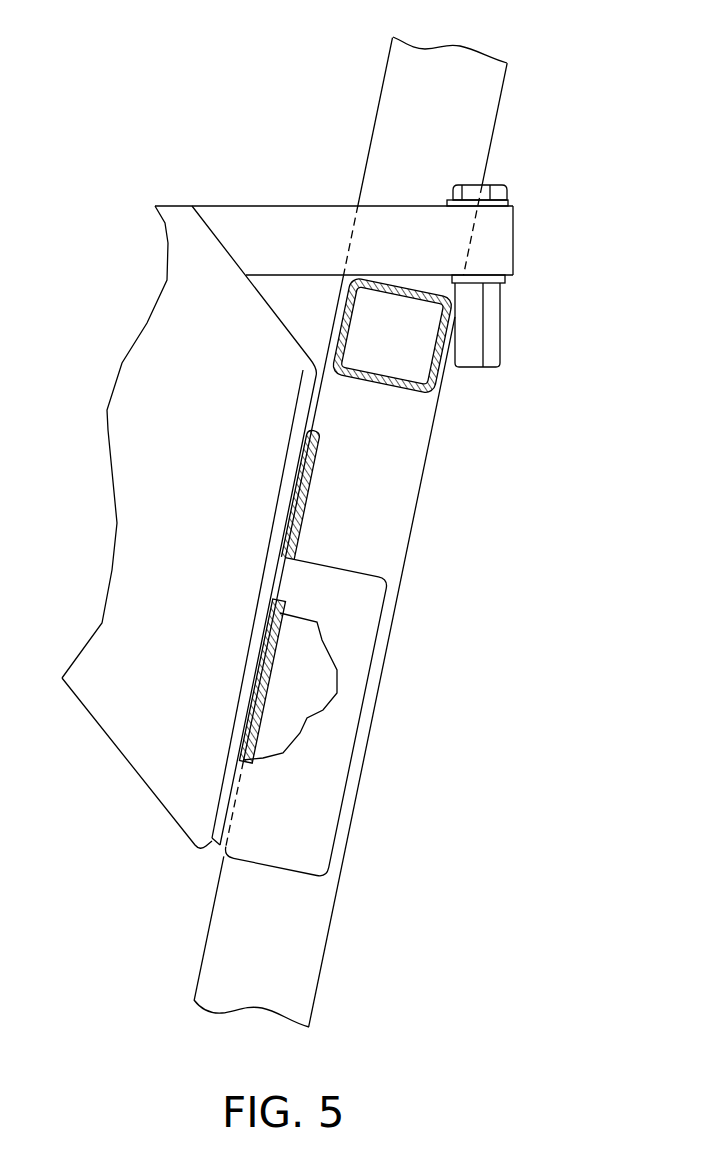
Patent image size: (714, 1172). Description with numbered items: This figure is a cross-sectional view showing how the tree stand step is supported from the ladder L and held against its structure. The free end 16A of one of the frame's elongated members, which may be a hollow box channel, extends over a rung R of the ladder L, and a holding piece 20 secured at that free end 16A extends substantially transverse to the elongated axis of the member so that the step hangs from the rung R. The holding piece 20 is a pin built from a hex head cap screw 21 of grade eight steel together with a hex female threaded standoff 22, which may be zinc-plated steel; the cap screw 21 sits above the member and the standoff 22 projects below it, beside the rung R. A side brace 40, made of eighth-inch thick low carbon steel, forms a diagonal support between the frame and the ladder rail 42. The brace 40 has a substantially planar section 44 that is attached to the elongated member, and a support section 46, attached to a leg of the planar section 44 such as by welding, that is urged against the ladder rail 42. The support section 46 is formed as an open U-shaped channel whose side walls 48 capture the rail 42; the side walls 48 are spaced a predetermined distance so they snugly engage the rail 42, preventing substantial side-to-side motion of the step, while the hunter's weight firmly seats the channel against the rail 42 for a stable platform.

The free end 16A is at (292, 220).
The holding piece 20 is at (521, 296).
The cap screw 21 is at (493, 182).
The standoff 22 is at (492, 343).
The side brace 40 is at (203, 547).
The ladder rail 42 is at (305, 927).
The planar section 44 is at (138, 462).
The support section 46 is at (357, 812).
The side wall 48 is at (355, 635).
The ladder L is at (415, 539).
The rung R is at (405, 400).